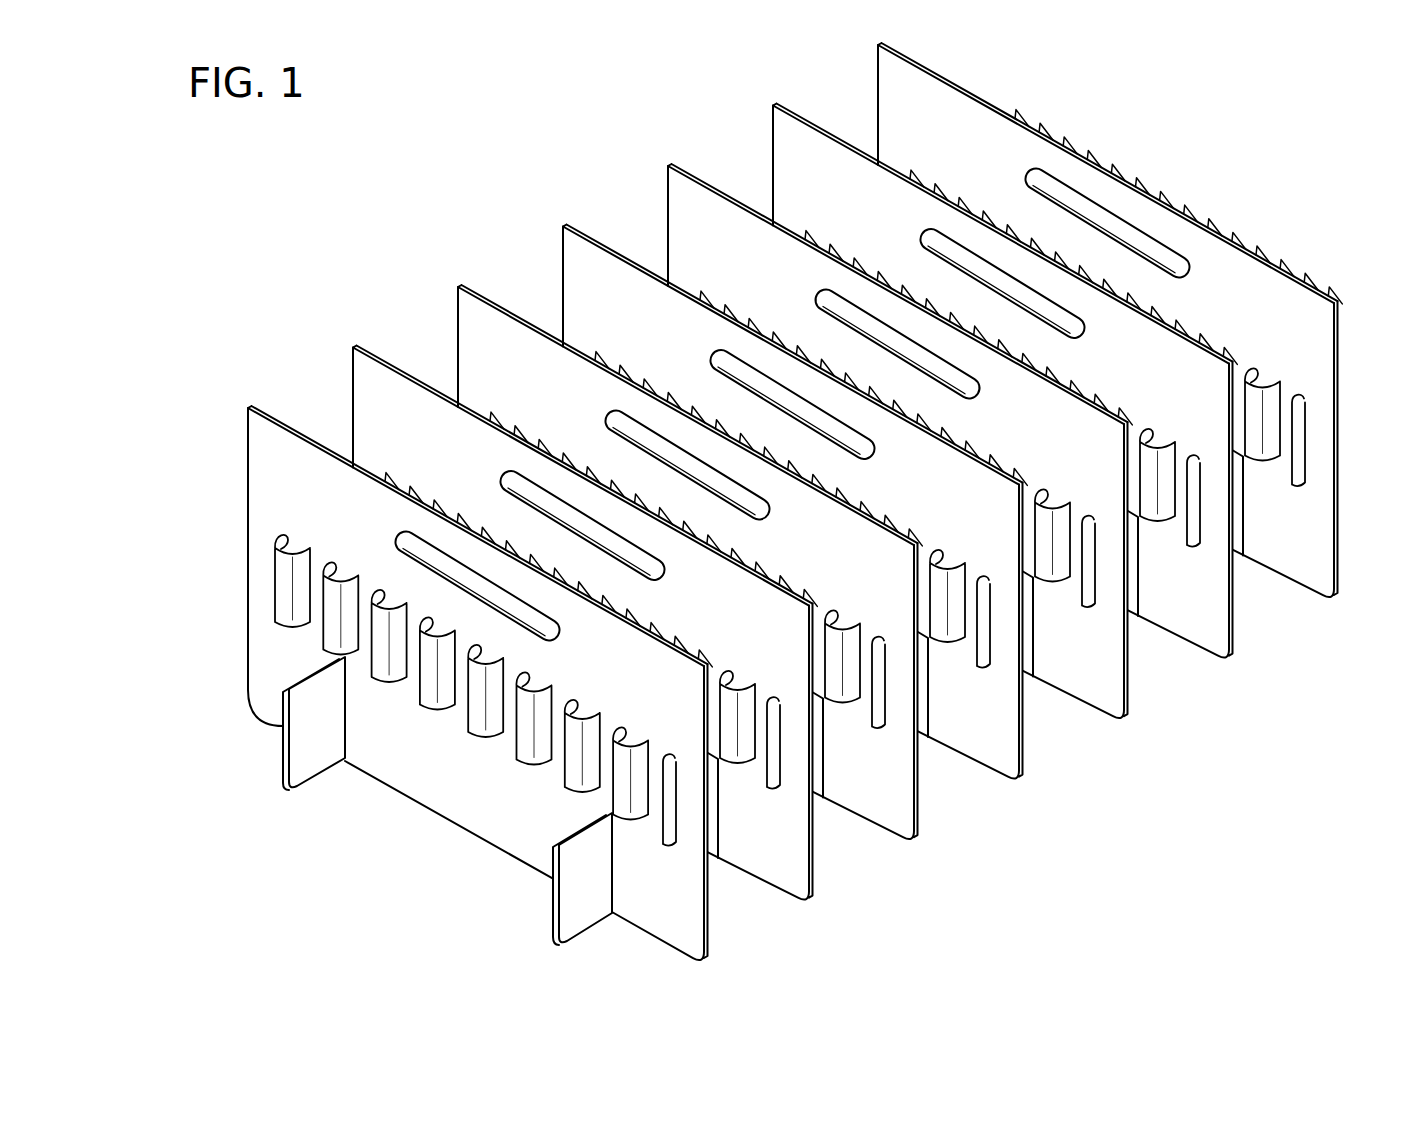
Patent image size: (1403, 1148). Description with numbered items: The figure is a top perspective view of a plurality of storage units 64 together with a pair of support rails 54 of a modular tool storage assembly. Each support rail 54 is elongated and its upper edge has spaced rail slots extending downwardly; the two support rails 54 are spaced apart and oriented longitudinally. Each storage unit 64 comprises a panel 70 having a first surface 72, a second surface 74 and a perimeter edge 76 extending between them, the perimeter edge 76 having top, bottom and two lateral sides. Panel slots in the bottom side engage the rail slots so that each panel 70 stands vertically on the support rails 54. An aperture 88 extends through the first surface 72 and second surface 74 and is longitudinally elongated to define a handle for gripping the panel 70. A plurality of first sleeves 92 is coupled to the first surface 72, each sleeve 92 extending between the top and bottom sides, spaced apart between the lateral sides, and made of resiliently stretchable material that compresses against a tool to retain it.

The support rail 54 is at (323, 770).
The storage unit 64 is at (470, 238).
The panel 70 is at (250, 408).
The first surface 72 is at (297, 507).
The second surface 74 is at (290, 428).
The perimeter edge 76 is at (248, 583).
The aperture 88 is at (1116, 214).
The first sleeve 92 is at (380, 648).